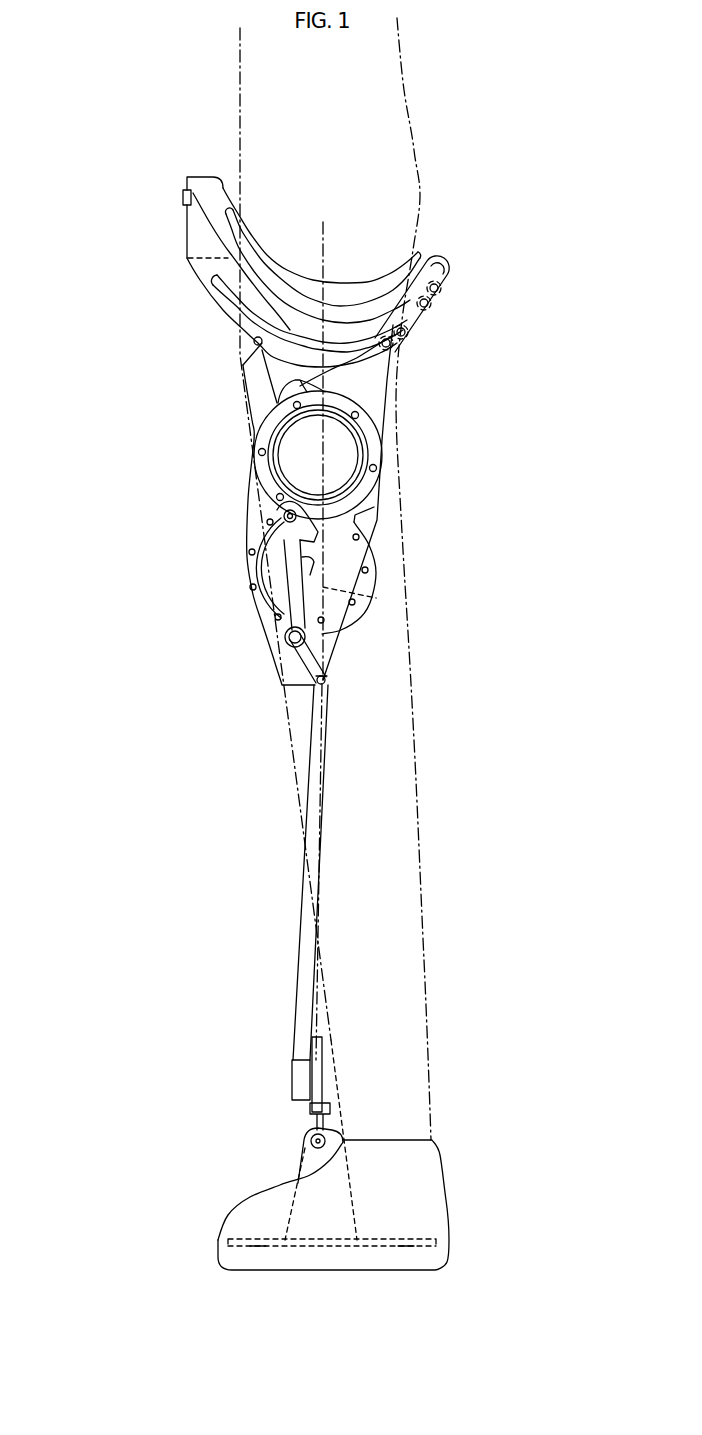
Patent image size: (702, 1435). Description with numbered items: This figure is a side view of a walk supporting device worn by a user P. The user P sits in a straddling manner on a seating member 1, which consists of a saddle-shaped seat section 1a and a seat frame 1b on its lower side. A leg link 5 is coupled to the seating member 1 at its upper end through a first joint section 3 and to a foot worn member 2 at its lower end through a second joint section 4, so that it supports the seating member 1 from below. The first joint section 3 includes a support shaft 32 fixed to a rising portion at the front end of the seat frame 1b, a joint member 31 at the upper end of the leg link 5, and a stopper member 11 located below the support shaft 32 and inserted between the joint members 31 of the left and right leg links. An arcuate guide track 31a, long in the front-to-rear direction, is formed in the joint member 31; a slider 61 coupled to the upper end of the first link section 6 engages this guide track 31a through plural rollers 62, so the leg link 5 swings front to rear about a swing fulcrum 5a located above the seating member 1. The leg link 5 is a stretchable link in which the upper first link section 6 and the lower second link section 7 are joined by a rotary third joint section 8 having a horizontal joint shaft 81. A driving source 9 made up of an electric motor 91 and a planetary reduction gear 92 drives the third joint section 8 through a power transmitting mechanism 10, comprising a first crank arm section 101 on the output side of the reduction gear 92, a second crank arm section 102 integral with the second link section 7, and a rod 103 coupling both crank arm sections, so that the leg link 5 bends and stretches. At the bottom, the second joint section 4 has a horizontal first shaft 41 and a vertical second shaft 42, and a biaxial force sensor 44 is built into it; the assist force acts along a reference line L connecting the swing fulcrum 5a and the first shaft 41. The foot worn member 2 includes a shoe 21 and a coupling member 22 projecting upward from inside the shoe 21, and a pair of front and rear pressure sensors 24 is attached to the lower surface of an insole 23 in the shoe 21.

The user P is at (420, 128).
The seating member 1 is at (294, 258).
The seat section 1a is at (270, 253).
The seat frame 1b is at (215, 308).
The first joint section 3 is at (180, 178).
The support shaft 32 is at (183, 197).
The stopper member 11 is at (199, 263).
The joint member 31 is at (254, 343).
The guide track 31a is at (262, 352).
The swing fulcrum 5a is at (328, 222).
The leg link 5 is at (376, 527).
The first link section 6 is at (247, 505).
The slider 61 is at (397, 347).
The rollers 62 is at (425, 302).
The driving source 9 is at (354, 455).
The electric motor 91 is at (345, 452).
The reduction gear 92 is at (345, 576).
The reference line L is at (357, 600).
The power transmitting mechanism 10 is at (278, 566).
The first crank arm section 101 is at (284, 537).
The second crank arm section 102 is at (310, 658).
The rod 103 is at (286, 588).
The third joint section 8 is at (330, 675).
The joint shaft 81 is at (326, 683).
The second link section 7 is at (307, 781).
The second joint section 4 is at (294, 1092).
The force sensor 44 is at (327, 1053).
The second shaft 42 is at (325, 1108).
The first shaft 41 is at (326, 1137).
The foot worn member 2 is at (332, 1223).
The shoe 21 is at (420, 1194).
The coupling member 22 is at (300, 1160).
The insole 23 is at (240, 1238).
The pressure sensors 24 is at (406, 1292).